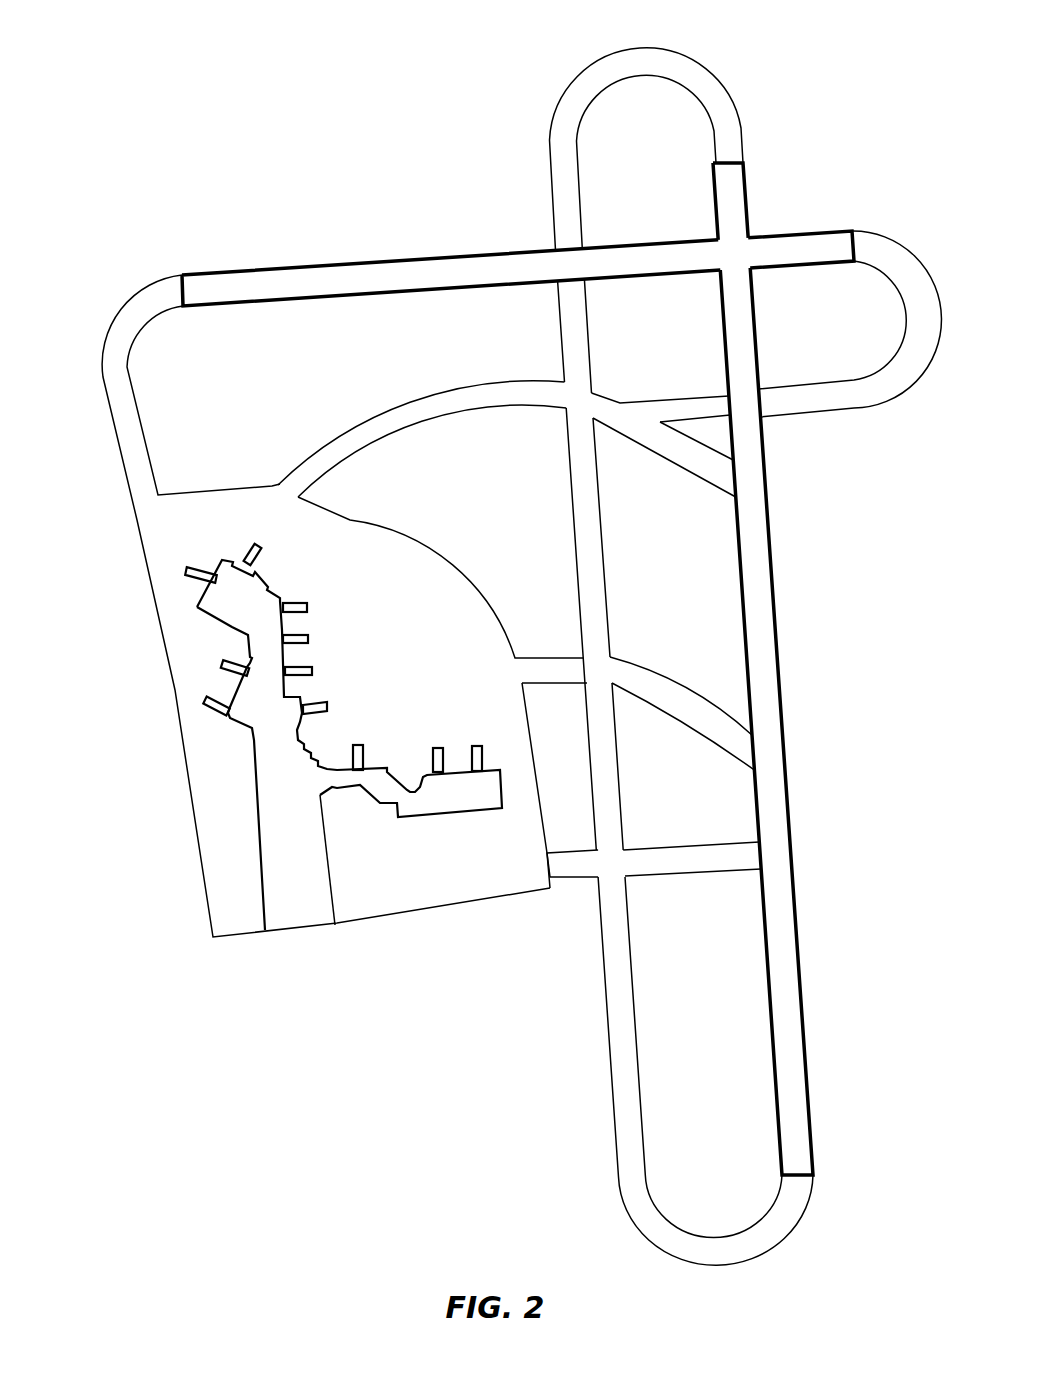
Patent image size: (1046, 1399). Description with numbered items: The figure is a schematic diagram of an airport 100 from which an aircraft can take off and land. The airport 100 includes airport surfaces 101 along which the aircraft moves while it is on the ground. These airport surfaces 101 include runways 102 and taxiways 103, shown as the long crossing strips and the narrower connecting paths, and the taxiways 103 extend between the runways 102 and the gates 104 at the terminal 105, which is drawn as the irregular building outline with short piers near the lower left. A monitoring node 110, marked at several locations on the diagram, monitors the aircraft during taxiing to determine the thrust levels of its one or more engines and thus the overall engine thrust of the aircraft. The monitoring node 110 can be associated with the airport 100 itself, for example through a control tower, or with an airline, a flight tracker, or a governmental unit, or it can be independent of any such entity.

The airport 100 is at (378, 1040).
The airport surfaces 101 is at (188, 418).
The runways 102 is at (390, 278).
The taxiways 103 is at (603, 57).
The gates 104 is at (188, 572).
The terminal 105 is at (287, 803).
The monitoring node 110 is at (141, 37).